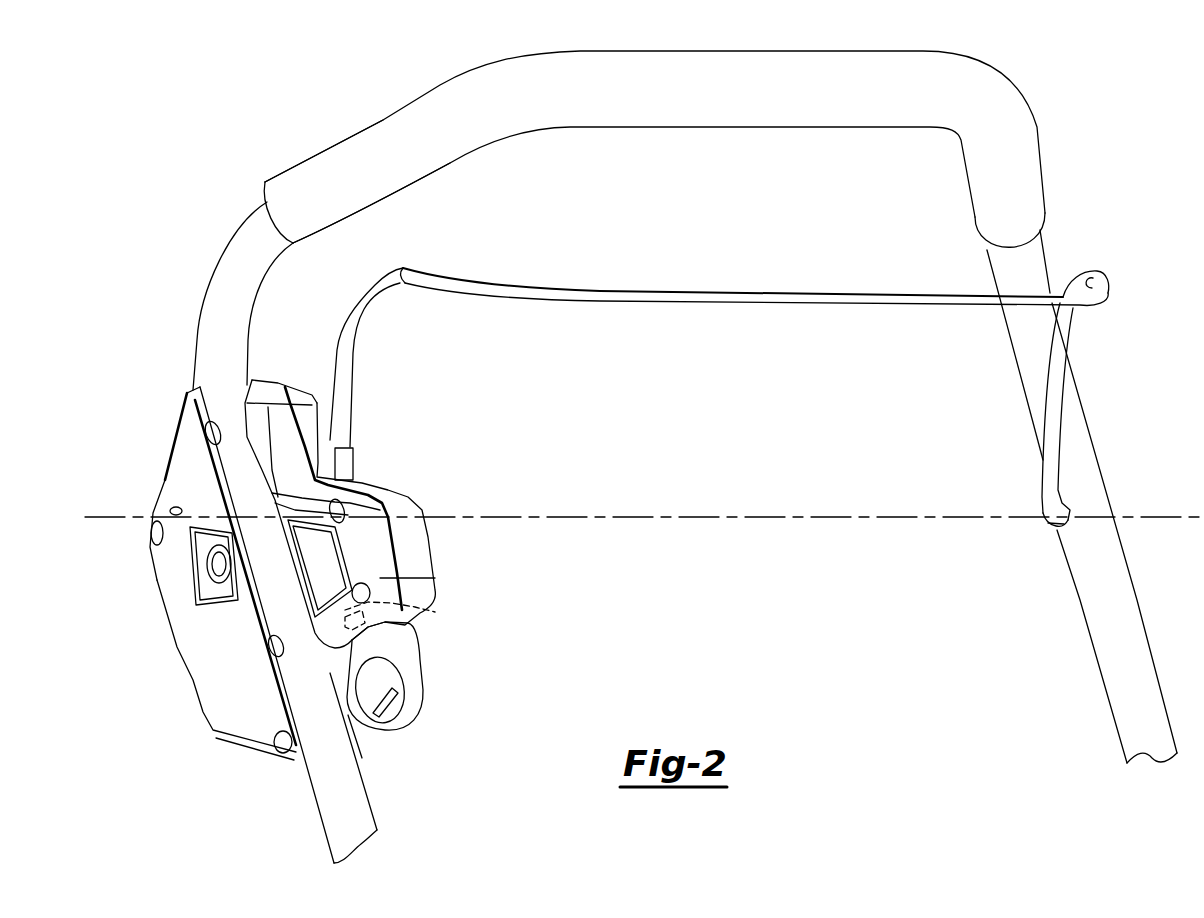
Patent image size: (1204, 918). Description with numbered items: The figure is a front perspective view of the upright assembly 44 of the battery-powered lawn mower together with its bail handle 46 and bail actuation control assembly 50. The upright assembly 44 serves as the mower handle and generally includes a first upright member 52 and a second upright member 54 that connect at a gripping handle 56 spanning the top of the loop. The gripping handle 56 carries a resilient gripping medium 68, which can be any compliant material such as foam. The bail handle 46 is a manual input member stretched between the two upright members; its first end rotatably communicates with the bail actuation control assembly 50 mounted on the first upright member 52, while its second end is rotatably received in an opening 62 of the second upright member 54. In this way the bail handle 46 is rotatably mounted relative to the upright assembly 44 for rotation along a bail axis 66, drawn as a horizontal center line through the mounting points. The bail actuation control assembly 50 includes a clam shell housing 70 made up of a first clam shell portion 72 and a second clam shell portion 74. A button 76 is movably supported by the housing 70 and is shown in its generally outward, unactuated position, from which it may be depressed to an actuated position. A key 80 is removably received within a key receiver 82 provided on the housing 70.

The upright assembly 44 is at (1139, 385).
The bail handle 46 is at (760, 293).
The bail actuation control assembly 50 is at (369, 585).
The first upright member 52 is at (322, 810).
The second upright member 54 is at (1123, 620).
The gripping handle 56 is at (680, 107).
The opening 62 is at (1057, 528).
The bail axis 66 is at (1160, 517).
The resilient gripping medium 68 is at (462, 93).
The clam shell housing 70 is at (183, 457).
The first clam shell portion 72 is at (217, 687).
The second clam shell portion 74 is at (303, 387).
The button 76 is at (207, 568).
The key 80 is at (417, 700).
The key receiver 82 is at (435, 612).